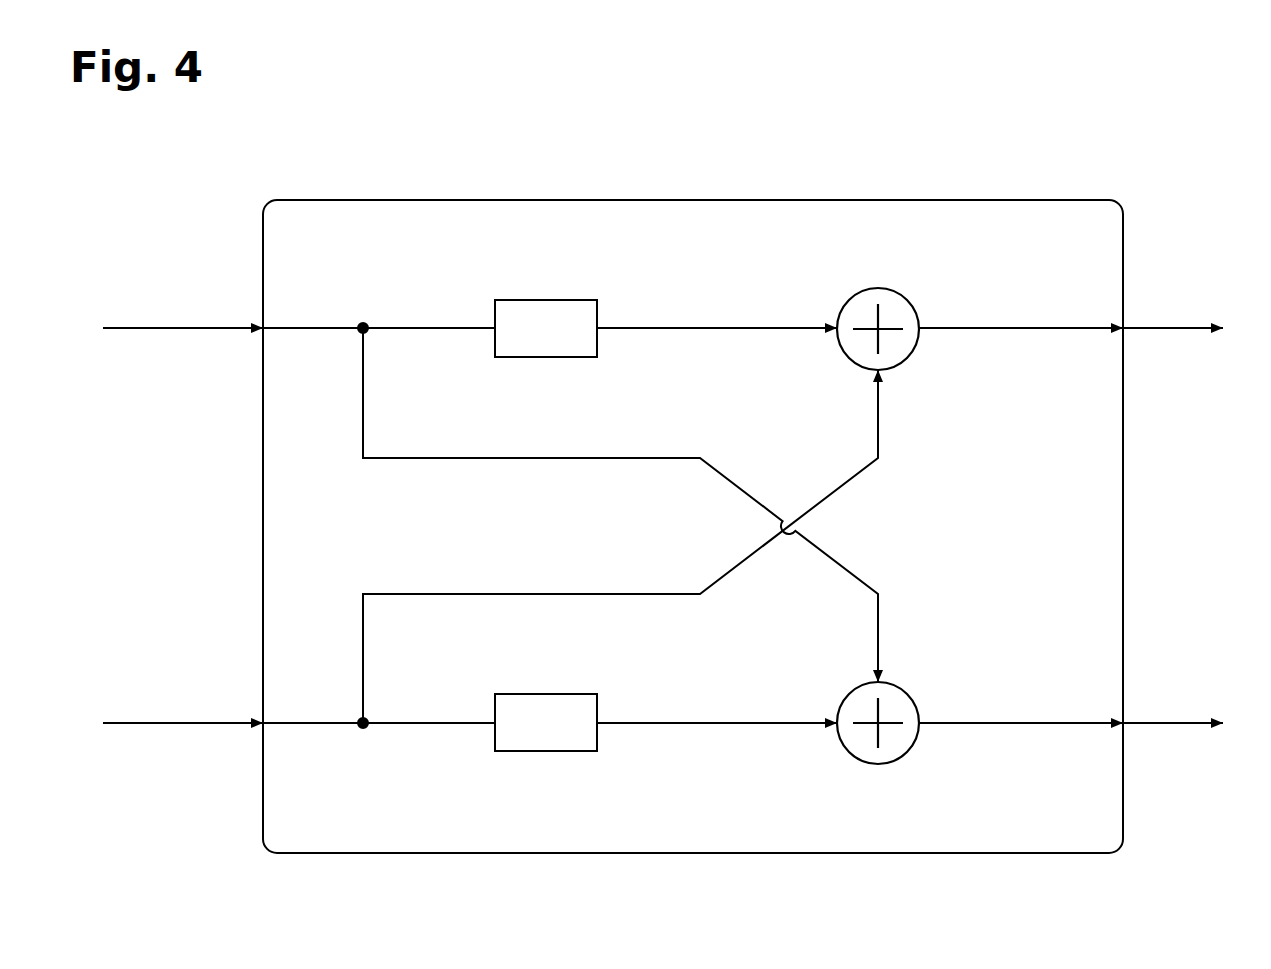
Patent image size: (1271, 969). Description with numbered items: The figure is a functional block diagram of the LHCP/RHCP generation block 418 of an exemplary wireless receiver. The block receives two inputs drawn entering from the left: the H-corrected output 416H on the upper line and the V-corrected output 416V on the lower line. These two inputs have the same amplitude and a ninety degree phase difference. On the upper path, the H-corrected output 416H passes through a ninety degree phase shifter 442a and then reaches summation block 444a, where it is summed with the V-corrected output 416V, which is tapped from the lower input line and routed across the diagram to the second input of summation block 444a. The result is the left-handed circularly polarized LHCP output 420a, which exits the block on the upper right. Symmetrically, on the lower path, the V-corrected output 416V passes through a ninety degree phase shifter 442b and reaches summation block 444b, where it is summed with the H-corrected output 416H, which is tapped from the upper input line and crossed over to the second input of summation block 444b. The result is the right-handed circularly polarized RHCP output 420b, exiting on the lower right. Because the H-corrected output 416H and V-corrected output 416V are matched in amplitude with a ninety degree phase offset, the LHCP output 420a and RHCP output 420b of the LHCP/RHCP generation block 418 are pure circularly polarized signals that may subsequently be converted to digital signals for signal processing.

The LHCP/RHCP generation block 418 is at (1165, 137).
The H-corrected output 416H is at (173, 323).
The V-corrected output 416V is at (172, 728).
The 90° phase shifter 442a is at (548, 299).
The 90° phase shifter 442b is at (550, 693).
The summation block 444a is at (880, 287).
The summation block 444b is at (878, 766).
The LHCP output 420a is at (1200, 326).
The RHCP output 420b is at (1198, 722).